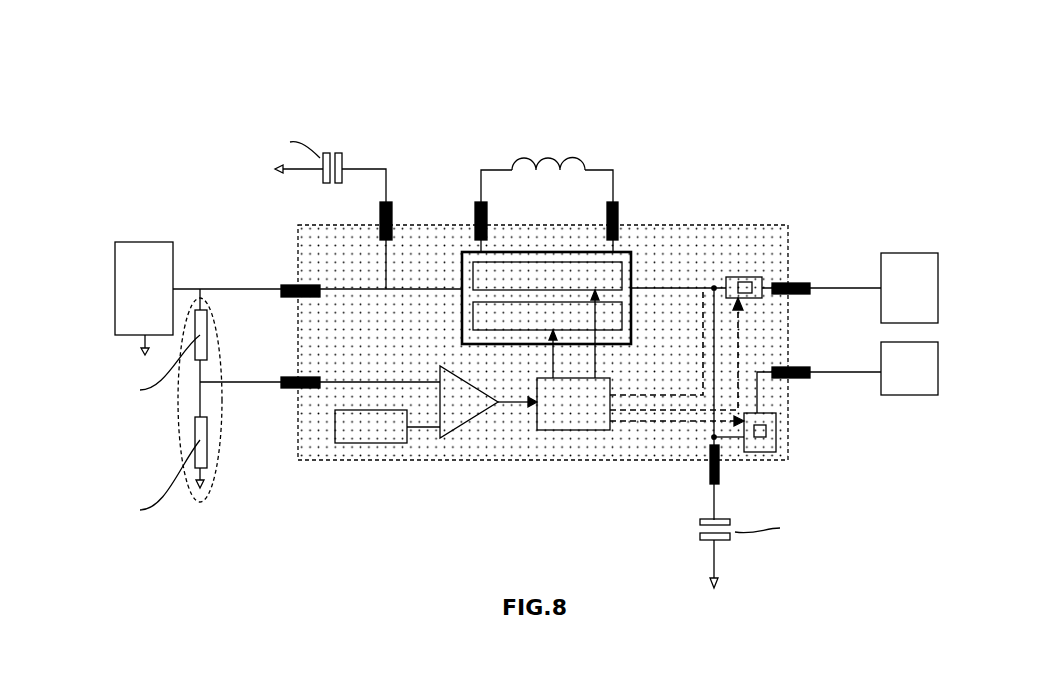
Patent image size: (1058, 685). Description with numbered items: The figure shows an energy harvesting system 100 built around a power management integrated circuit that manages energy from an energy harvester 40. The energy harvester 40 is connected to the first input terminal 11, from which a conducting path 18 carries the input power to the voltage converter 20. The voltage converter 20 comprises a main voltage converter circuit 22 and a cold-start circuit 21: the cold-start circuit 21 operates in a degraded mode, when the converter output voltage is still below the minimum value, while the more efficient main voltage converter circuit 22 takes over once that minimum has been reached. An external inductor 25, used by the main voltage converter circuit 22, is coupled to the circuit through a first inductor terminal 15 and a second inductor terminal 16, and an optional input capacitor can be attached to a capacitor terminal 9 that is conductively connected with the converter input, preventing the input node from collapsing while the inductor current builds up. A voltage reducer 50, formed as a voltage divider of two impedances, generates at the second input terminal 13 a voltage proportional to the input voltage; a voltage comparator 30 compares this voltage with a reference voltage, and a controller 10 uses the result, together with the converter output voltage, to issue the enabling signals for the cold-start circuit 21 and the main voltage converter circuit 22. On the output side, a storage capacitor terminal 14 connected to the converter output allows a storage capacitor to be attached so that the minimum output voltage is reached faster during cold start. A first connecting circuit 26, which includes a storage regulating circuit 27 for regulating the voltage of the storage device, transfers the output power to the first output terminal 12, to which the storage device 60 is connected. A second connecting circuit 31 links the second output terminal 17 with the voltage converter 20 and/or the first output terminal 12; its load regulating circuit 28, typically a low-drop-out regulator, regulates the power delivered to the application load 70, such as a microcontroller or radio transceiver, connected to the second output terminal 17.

The energy harvesting system 100 is at (232, 82).
The capacitor terminal 9 is at (392, 215).
The controller 10 is at (575, 430).
The first input terminal 11 is at (281, 289).
The first output terminal 12 is at (805, 283).
The second input terminal 13 is at (281, 381).
The storage capacitor terminal 14 is at (719, 465).
The first inductor terminal 15 is at (475, 220).
The second inductor terminal 16 is at (618, 215).
The second output terminal 17 is at (775, 367).
The conducting path 18 is at (360, 289).
The voltage converter 20 is at (546, 260).
The cold-start circuit 21 is at (500, 315).
The main voltage converter circuit 22 is at (500, 268).
The inductor 25 is at (512, 158).
The first connecting circuit 26 is at (761, 238).
The storage regulating circuit 27 is at (748, 282).
The load regulating circuit 28 is at (766, 430).
The voltage comparator 30 is at (470, 420).
The second connecting circuit 31 is at (800, 450).
The energy harvester 40 is at (115, 290).
The voltage reducer 50 is at (178, 415).
The storage device 60 is at (910, 253).
The application load 70 is at (910, 395).